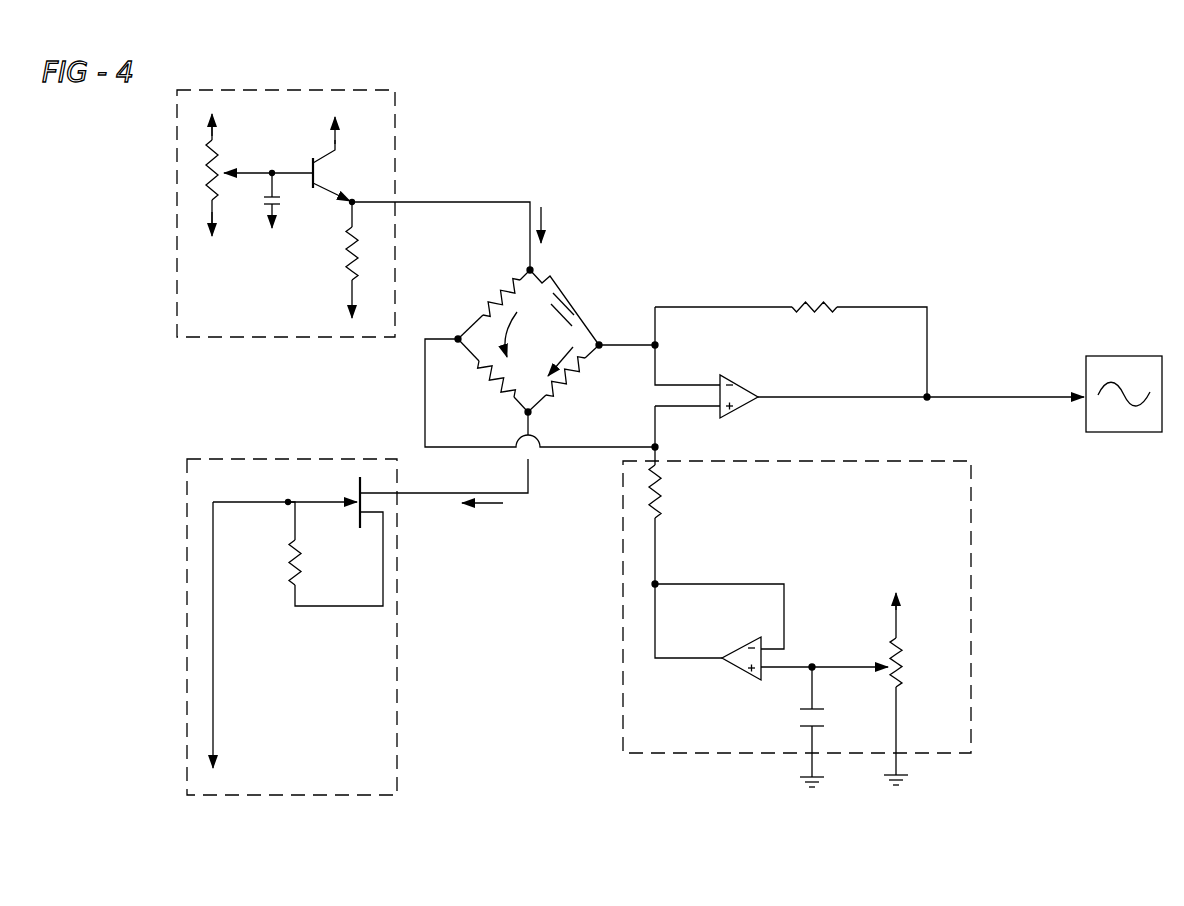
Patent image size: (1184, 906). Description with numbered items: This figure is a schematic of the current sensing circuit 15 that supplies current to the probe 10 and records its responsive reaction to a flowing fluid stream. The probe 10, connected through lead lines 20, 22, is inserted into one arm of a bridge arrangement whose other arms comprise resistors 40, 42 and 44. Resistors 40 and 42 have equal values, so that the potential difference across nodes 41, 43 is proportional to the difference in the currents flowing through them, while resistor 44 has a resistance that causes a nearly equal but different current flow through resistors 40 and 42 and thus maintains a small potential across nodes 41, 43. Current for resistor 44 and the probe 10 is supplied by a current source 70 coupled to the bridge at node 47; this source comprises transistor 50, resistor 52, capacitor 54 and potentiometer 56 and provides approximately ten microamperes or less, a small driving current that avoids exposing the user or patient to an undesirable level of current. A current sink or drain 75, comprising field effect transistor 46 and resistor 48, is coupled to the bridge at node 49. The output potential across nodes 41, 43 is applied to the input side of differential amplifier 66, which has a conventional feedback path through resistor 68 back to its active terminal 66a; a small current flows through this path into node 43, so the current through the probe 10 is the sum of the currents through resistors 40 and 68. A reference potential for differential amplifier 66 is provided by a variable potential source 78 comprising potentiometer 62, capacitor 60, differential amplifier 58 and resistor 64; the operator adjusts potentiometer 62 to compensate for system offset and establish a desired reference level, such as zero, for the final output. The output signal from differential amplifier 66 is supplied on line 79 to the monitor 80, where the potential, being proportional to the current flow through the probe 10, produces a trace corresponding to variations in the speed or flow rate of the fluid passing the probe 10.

The probe 10 is at (590, 289).
The current sensing circuit 15 is at (661, 172).
The lead line 20 is at (547, 267).
The lead line 22 is at (599, 345).
The resistor 40 is at (569, 386).
The node 41 is at (423, 342).
The resistor 42 is at (495, 404).
The node 43 is at (600, 344).
The resistor 44 is at (492, 296).
The field effect transistor 46 is at (355, 493).
The node 47 is at (530, 270).
The resistor 48 is at (298, 556).
The node 49 is at (532, 413).
The transistor 50 is at (325, 178).
The resistor 52 is at (357, 258).
The capacitor 54 is at (283, 200).
The potentiometer 56 is at (203, 180).
The differential amplifier 58 is at (722, 668).
The capacitor 60 is at (820, 718).
The potentiometer 62 is at (905, 665).
The resistor 64 is at (660, 500).
The differential amplifier 66 is at (748, 410).
The active terminal 66a is at (672, 385).
The resistor 68 is at (830, 303).
The current source 70 is at (395, 118).
The current sink or drain 75 is at (397, 625).
The variable potential source 78 is at (971, 517).
The line 79 is at (955, 397).
The monitor 80 is at (1100, 356).